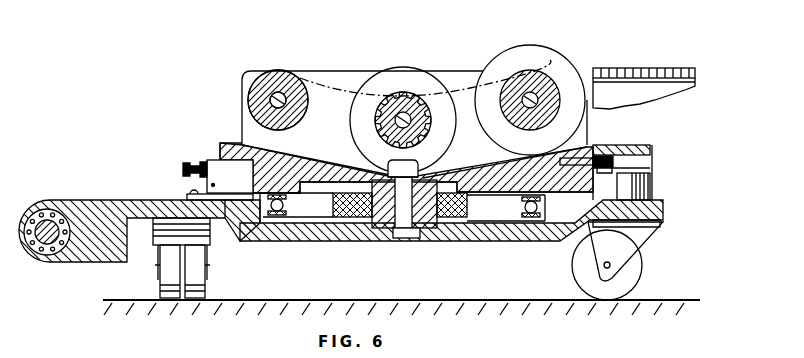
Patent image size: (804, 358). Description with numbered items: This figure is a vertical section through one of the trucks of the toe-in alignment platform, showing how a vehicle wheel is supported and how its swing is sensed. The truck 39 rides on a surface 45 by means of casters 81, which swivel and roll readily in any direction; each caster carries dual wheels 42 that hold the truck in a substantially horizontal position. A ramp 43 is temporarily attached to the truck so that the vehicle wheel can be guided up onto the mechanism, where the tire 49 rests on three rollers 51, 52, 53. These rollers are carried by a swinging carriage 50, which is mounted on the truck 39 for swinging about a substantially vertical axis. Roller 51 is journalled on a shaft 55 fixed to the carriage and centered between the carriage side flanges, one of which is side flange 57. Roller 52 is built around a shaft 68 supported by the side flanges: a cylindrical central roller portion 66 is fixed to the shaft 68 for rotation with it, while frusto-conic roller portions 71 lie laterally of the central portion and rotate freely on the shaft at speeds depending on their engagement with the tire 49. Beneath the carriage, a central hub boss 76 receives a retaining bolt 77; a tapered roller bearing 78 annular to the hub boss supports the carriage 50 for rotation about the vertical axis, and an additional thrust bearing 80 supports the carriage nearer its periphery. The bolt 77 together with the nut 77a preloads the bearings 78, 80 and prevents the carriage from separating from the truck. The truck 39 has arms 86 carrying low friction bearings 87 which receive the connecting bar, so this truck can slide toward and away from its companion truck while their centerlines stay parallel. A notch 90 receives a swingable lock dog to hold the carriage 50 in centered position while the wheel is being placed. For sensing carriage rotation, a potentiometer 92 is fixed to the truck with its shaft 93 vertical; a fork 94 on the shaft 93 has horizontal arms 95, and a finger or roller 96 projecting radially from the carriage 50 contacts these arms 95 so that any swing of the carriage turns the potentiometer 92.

The truck 39 is at (503, 246).
The wheels 42 is at (173, 283).
The ramp 43 is at (652, 68).
The surface 45 is at (365, 299).
The tire 49 is at (275, 72).
The swinging carriage 50 is at (241, 146).
The roller 51 is at (272, 77).
The roller 52 is at (438, 71).
The roller 53 is at (577, 58).
The shaft 55 is at (270, 100).
The side flange 57 is at (330, 78).
The cylindrical central roller portion 66 is at (358, 136).
The shaft 68 is at (433, 126).
The frusto-conic roller portion 71 is at (377, 112).
The central hub boss 76 is at (432, 238).
The retaining bolt 77 is at (398, 240).
The nut 77a is at (424, 165).
The tapered roller bearing 78 is at (350, 240).
The thrust bearing 80 is at (285, 205).
The caster 81 is at (223, 252).
The arm 86 is at (98, 200).
The low friction bearing 87 is at (44, 210).
The notch 90 is at (232, 165).
The potentiometer 92 is at (636, 184).
The shaft 93 is at (632, 171).
The fork 94 is at (653, 150).
The arm 95 is at (604, 173).
The finger or roller 96 is at (601, 152).